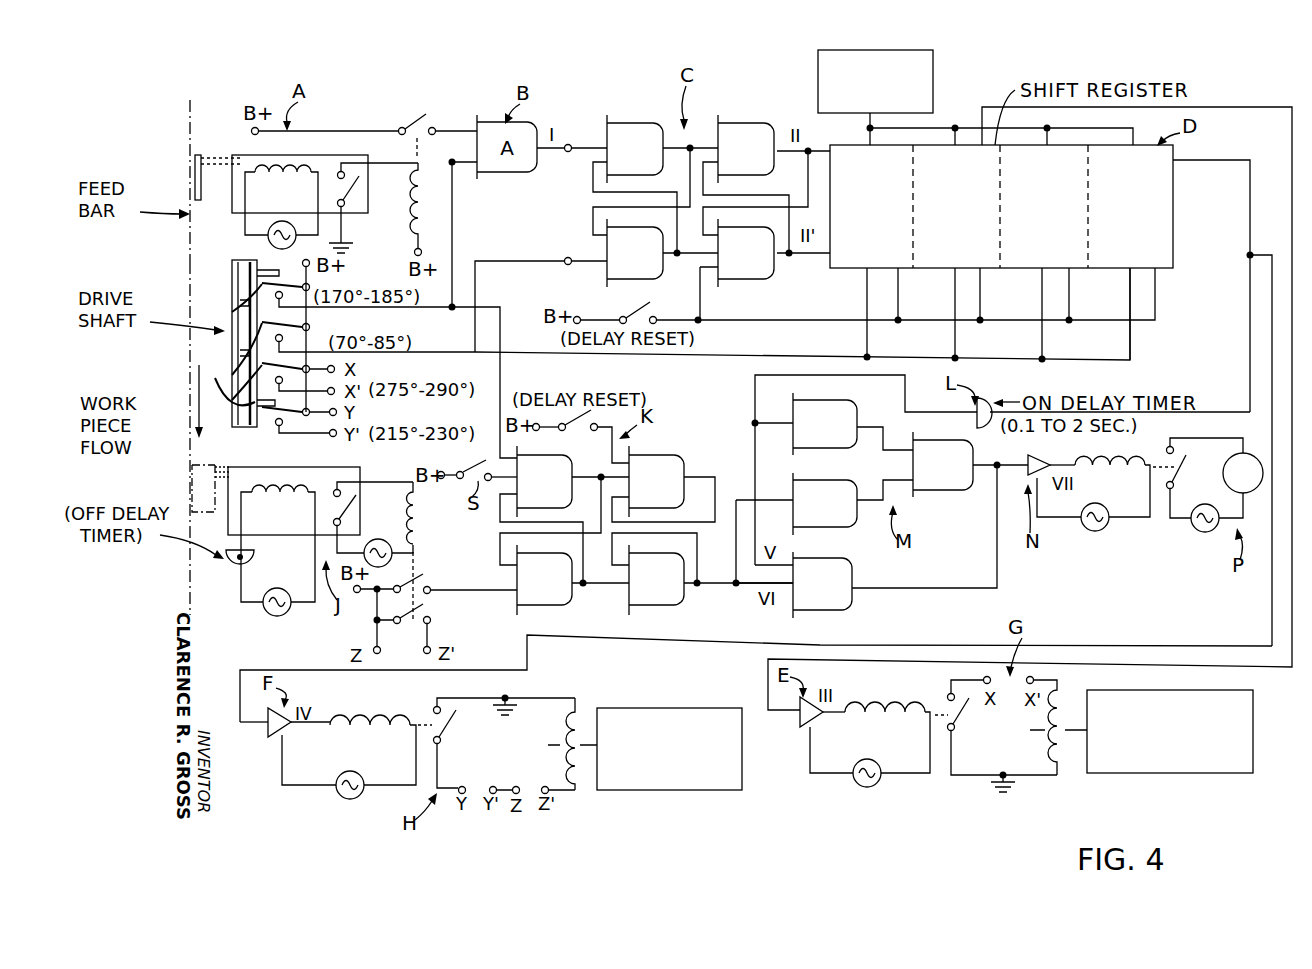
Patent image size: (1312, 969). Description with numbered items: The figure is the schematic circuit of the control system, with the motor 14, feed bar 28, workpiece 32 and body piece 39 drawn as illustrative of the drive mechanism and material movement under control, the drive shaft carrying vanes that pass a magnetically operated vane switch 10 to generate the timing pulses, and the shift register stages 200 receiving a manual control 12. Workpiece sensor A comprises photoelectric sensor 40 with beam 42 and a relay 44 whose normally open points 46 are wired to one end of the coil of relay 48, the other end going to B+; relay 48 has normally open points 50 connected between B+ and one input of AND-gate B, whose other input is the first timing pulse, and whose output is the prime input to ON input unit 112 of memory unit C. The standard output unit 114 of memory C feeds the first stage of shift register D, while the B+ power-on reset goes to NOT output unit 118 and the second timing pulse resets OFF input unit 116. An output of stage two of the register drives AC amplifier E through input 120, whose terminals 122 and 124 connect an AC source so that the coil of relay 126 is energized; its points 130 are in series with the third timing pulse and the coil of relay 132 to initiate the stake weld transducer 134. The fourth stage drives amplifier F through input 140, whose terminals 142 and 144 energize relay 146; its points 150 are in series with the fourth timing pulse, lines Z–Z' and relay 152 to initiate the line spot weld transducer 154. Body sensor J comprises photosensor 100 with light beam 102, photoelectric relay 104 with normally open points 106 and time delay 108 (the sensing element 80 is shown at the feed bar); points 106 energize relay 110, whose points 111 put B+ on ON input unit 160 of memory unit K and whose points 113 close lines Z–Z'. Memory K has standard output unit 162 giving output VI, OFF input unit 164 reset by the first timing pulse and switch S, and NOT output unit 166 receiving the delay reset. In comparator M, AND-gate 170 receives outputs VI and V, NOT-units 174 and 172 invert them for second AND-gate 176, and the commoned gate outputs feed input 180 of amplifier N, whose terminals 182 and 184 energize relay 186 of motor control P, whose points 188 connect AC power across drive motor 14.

The vane switch 10 is at (240, 297).
The manual control 12 is at (896, 48).
The motor 14 is at (1246, 500).
The feed bar 28 is at (190, 264).
The workpiece 32 is at (190, 178).
The body piece 39 is at (192, 471).
The photoelectric sensor 40 is at (242, 155).
The beam 42 is at (215, 165).
The relay 44 is at (268, 174).
The normally open points 46 is at (356, 186).
The relay 48 is at (412, 214).
The normally open points 50 is at (430, 126).
The off delay timer switch 80 is at (186, 499).
The photosensor 100 is at (292, 467).
The light beam 102 is at (230, 467).
The photoelectric relay 104 is at (277, 497).
The normally open points 106 is at (352, 506).
The time delay 108 is at (256, 554).
The relay 110 is at (428, 518).
The normally open points 111 is at (428, 584).
The ON input unit 112 is at (618, 123).
The normally open points 113 is at (432, 618).
The standard output unit 114 is at (748, 123).
The OFF input unit 116 is at (603, 248).
The NOT output unit 118 is at (762, 280).
The input 120 is at (800, 722).
The terminal 122 is at (830, 720).
The terminal 124 is at (808, 763).
The relay 126 is at (868, 703).
The normally open points 130 is at (970, 728).
The relay 132 is at (1044, 742).
The stake weld transducer 134 is at (1253, 722).
The input 140 is at (264, 732).
The terminal 142 is at (320, 728).
The terminal 144 is at (282, 778).
The relay 146 is at (392, 735).
The normally open points 150 is at (451, 733).
The relay 152 is at (578, 698).
The line spot weld transducer 154 is at (713, 792).
The ON input unit 160 is at (560, 606).
The standard output unit 162 is at (676, 606).
The OFF input unit 164 is at (558, 455).
The NOT output unit 166 is at (678, 455).
The AND-gate 170 is at (854, 560).
The NOT-unit 172 is at (848, 400).
The NOT-unit 174 is at (832, 480).
The AND-gate 176 is at (950, 492).
The input 180 is at (1012, 460).
The terminal 182 is at (1058, 457).
The terminal 184 is at (1042, 505).
The relay 186 is at (1116, 476).
The normally open relay points 188 is at (1199, 475).
The shift register stages 200 is at (972, 160).